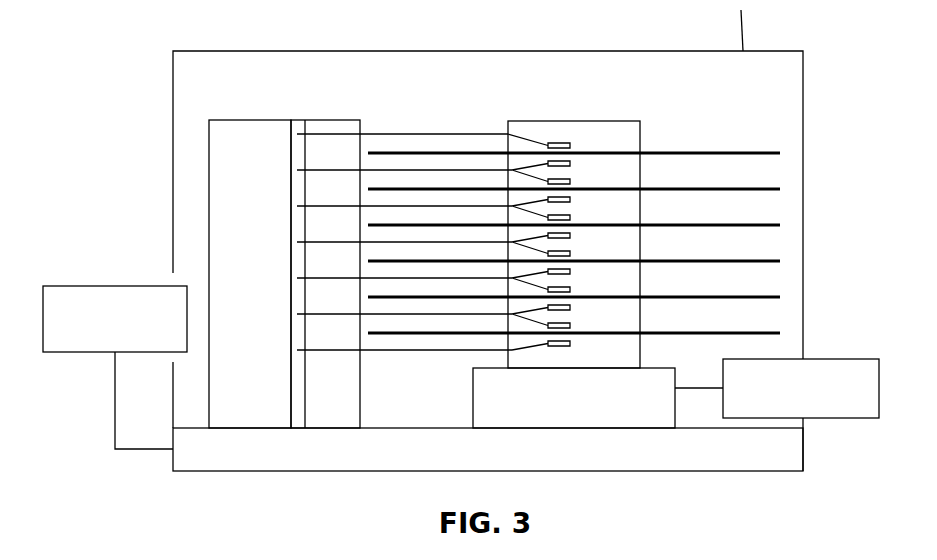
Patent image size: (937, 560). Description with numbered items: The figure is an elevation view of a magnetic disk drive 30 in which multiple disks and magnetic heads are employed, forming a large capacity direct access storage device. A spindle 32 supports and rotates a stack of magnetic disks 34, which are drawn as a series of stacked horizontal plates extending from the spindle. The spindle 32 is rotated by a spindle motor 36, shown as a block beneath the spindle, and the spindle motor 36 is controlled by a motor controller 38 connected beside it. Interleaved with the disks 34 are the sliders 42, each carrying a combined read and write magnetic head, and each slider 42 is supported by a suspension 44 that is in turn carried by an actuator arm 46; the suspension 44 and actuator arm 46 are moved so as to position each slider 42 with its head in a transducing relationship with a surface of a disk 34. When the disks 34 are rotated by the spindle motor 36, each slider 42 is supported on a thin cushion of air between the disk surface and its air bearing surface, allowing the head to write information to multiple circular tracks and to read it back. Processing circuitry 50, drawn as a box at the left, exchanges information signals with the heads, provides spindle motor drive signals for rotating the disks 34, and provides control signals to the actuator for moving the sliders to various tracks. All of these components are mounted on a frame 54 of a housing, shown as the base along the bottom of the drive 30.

The magnetic disk drive 30 is at (690, 128).
The spindle 32 is at (630, 121).
The magnetic disk 34 is at (780, 154).
The spindle motor 36 is at (564, 410).
The motor controller 38 is at (836, 418).
The slider 42 is at (570, 147).
The suspension 44 is at (548, 145).
The actuator arm 46 is at (490, 170).
The processing circuitry 50 is at (87, 286).
The frame 54 is at (225, 471).